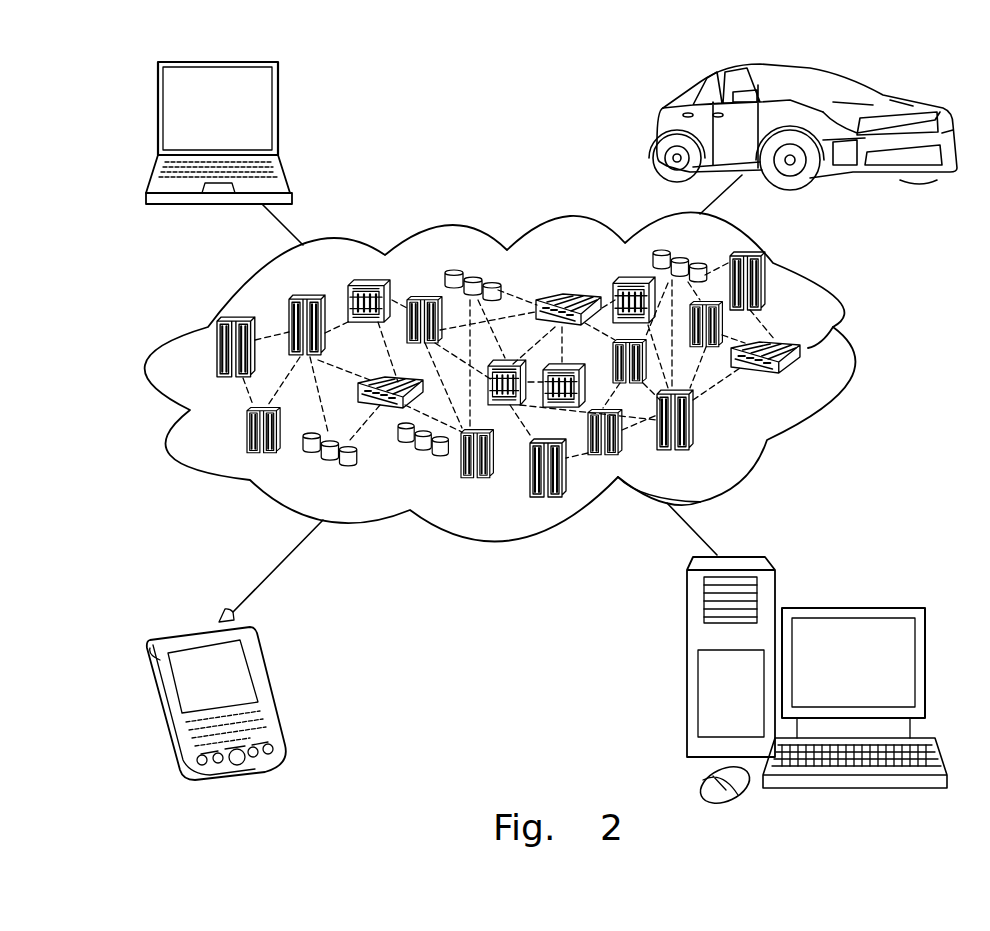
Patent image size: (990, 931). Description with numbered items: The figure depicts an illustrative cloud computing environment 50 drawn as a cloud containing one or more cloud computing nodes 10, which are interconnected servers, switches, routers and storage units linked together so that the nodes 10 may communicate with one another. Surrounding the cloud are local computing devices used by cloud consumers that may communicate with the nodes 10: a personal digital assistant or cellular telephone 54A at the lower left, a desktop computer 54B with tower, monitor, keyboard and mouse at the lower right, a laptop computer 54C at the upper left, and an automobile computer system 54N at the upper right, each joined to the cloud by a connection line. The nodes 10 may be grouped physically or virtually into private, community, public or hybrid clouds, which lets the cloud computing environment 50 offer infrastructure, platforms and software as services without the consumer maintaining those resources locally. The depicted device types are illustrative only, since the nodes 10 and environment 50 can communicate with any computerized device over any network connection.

The cloud computing nodes 10 is at (525, 376).
The cloud computing environment 50 is at (848, 355).
The personal digital assistant (PDA) or cellular telephone 54A is at (271, 689).
The desktop computer 54B is at (852, 608).
The laptop computer 54C is at (278, 117).
The automobile computer system 54N is at (661, 130).